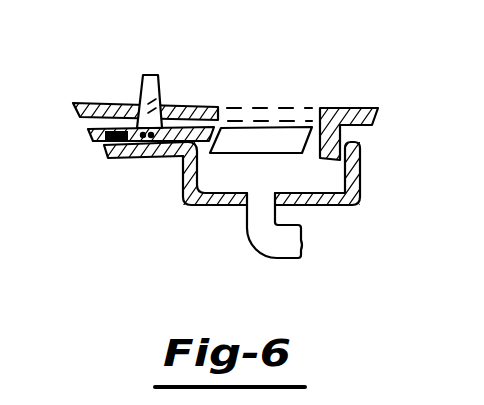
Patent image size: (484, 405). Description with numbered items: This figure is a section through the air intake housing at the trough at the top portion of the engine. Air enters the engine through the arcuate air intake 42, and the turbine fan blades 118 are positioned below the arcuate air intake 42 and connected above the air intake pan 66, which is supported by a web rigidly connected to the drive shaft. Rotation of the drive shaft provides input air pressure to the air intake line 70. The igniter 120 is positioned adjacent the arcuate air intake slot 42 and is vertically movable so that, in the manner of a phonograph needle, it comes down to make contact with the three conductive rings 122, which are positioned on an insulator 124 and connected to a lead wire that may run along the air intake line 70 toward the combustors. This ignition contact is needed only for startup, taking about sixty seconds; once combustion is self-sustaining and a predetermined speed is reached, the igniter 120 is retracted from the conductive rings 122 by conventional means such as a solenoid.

The igniter 120 is at (151, 75).
The arcuate air intake 42 is at (218, 113).
The turbine fan blades 118 is at (278, 138).
The air intake pan 66 is at (353, 177).
The air intake line 70 is at (283, 260).
The insulator 124 is at (107, 158).
The conductive rings 122 is at (130, 158).